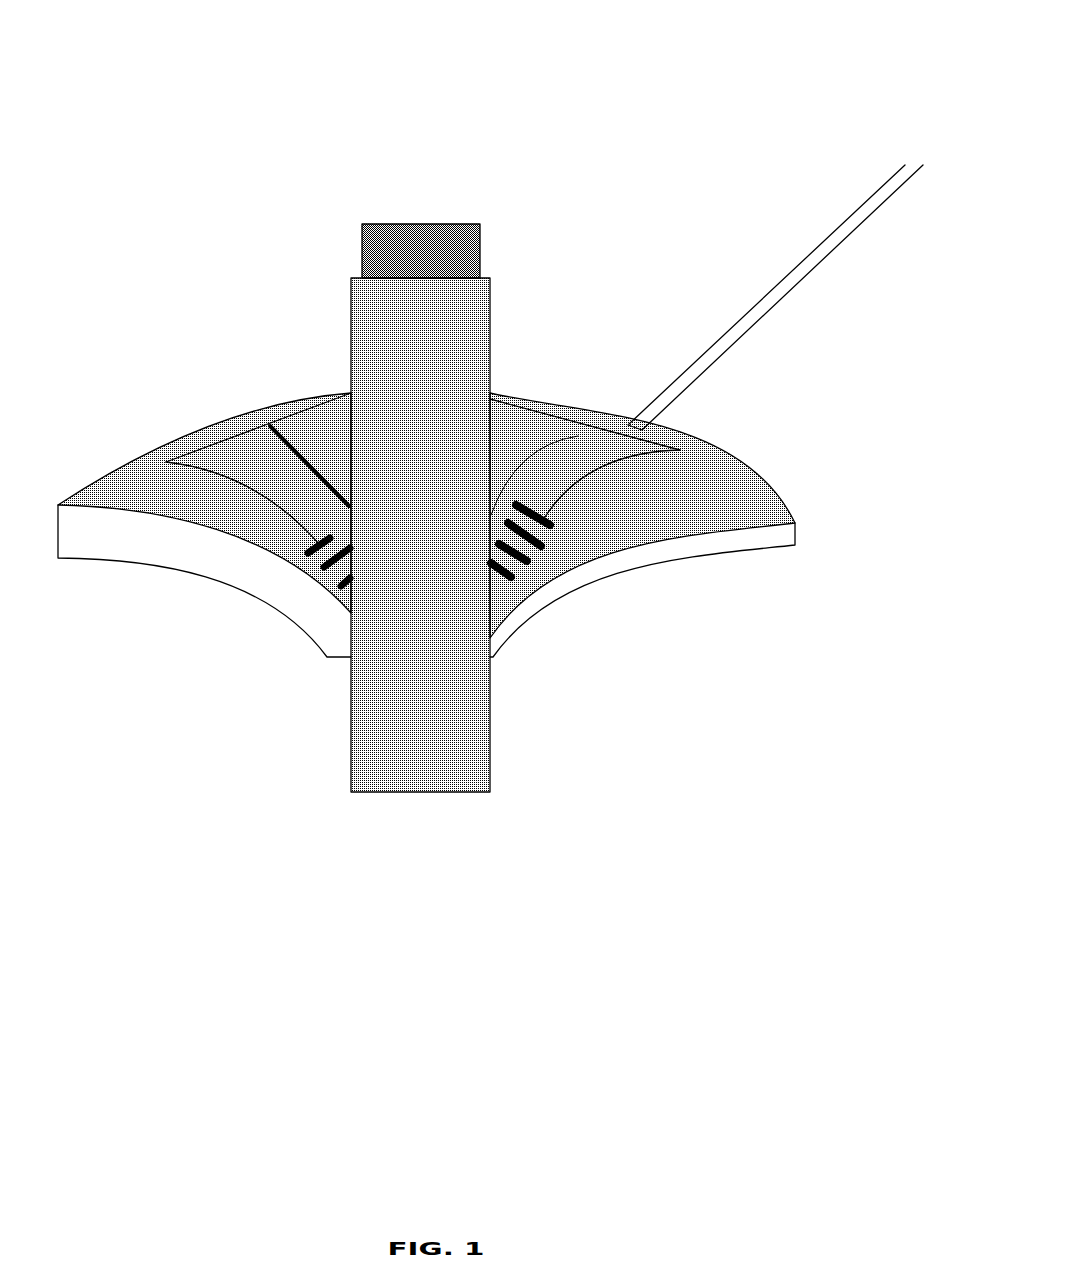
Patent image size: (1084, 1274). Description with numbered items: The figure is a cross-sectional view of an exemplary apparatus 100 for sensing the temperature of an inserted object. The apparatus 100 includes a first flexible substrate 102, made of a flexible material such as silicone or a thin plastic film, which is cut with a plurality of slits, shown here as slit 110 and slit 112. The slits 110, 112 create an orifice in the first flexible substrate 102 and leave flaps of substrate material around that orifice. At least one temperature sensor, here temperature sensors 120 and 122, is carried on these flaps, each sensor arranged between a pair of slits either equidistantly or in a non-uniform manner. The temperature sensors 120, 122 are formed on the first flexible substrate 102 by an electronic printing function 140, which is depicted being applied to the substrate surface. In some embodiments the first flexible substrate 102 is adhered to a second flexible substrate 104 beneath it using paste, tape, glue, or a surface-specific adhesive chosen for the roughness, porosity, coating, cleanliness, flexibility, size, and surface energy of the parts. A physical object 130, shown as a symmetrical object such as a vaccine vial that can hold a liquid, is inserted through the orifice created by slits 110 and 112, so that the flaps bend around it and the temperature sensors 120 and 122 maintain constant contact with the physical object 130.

The apparatus 100 is at (897, 45).
The first flexible substrate 102 is at (728, 442).
The second flexible substrate 104 is at (797, 541).
The slit 110 is at (337, 495).
The slit 112 is at (502, 487).
The temperature sensor 120 is at (311, 555).
The temperature sensor 122 is at (552, 524).
The physical object 130 is at (408, 792).
The electronic printing function 140 is at (787, 286).